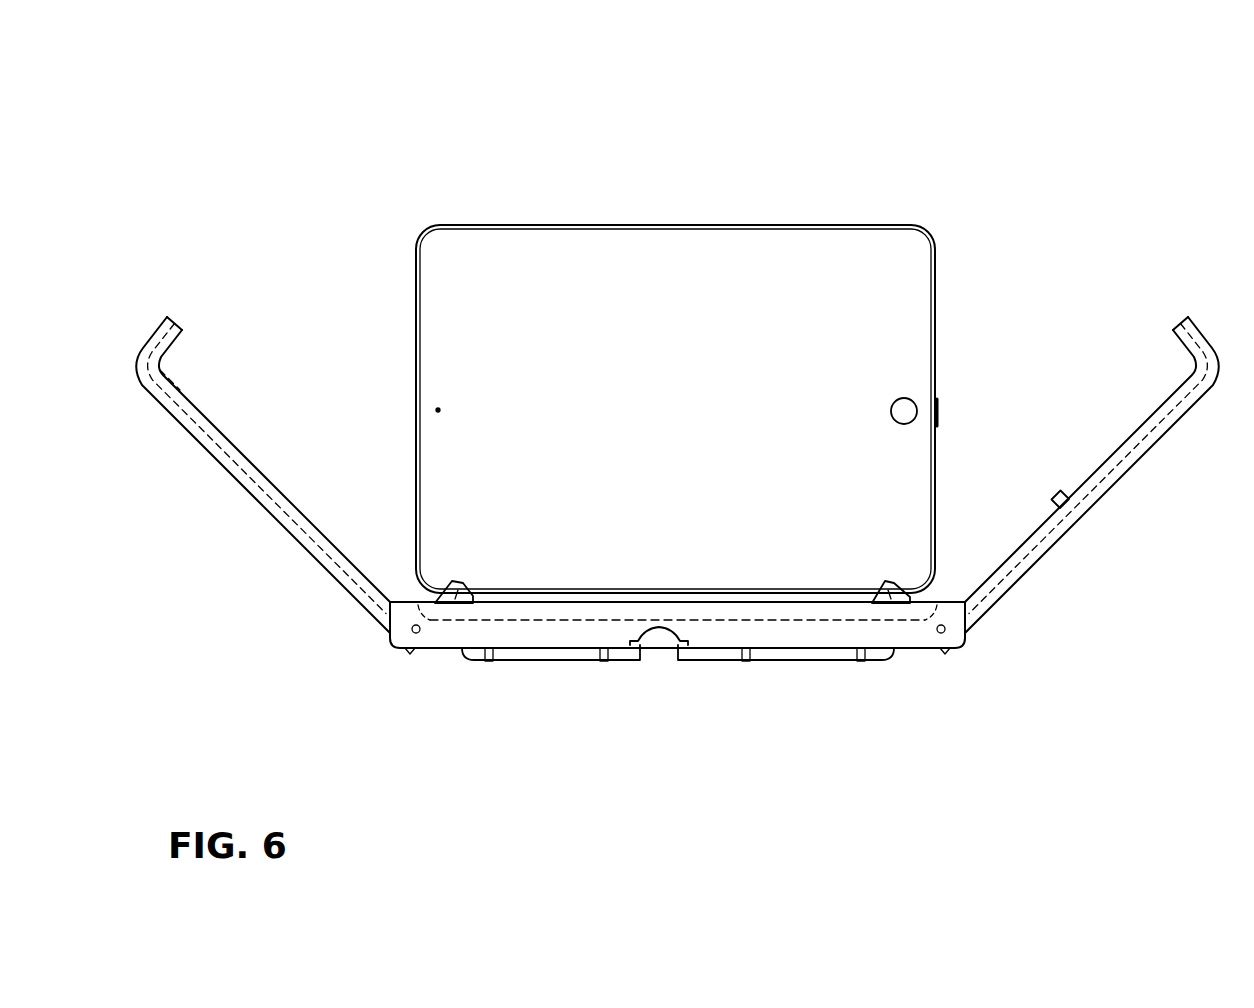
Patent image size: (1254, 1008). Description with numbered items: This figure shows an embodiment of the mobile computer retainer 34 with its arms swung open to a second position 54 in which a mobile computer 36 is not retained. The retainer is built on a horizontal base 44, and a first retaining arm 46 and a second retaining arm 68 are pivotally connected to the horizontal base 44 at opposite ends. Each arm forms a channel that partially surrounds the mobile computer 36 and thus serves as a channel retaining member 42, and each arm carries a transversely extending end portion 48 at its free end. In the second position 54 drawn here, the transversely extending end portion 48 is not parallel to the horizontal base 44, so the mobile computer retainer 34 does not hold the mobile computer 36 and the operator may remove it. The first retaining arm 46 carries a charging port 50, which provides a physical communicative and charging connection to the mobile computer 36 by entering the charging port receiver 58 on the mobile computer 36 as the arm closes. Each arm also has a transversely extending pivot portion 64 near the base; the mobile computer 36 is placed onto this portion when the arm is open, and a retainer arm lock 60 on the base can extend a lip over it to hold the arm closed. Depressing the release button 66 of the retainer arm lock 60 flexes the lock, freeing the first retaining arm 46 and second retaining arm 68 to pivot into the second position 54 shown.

The mobile computer retainer 34 is at (1060, 168).
The mobile computer 36 is at (613, 216).
The channel retaining member 42 is at (178, 378).
The horizontal base 44 is at (797, 636).
The first retaining arm 46 is at (1177, 424).
The transversely extending end portion 48 is at (153, 325).
The charging port 50 is at (1068, 503).
The second position 54 is at (328, 276).
The charging port receiver 58 is at (938, 410).
The retainer arm lock 60 is at (518, 652).
The transversely extending pivot portion 64 is at (461, 584).
The release button 66 is at (661, 645).
The second retaining arm 68 is at (247, 490).